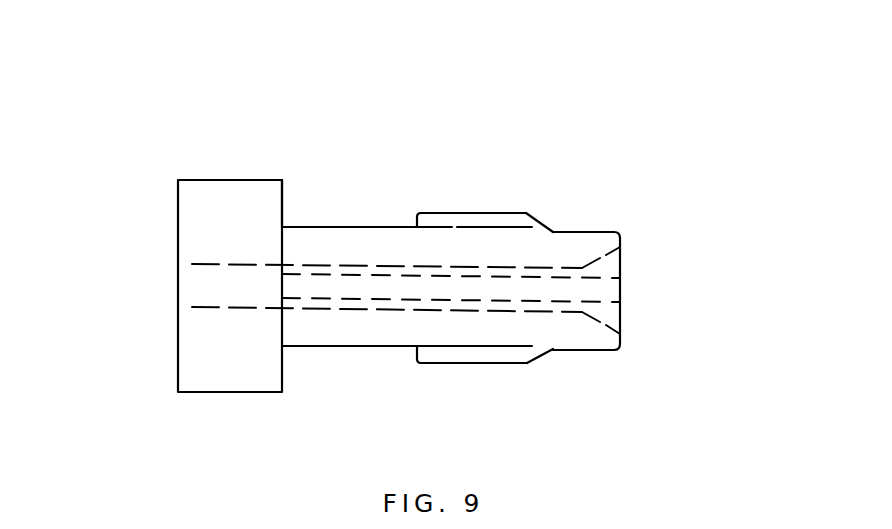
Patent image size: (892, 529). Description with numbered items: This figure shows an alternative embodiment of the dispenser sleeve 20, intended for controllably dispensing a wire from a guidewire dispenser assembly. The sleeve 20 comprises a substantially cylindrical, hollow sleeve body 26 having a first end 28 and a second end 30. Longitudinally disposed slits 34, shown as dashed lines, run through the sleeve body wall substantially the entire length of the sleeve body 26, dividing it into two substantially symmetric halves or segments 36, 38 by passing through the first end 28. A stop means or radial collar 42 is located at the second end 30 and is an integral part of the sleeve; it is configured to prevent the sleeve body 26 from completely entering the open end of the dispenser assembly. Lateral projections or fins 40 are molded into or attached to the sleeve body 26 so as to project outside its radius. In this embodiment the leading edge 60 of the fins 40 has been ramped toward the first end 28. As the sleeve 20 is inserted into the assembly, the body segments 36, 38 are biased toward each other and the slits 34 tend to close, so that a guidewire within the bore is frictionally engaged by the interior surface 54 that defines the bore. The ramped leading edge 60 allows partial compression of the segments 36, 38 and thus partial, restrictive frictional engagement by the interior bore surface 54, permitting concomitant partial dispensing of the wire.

The sleeve 20 is at (490, 124).
The sleeve body 26 is at (325, 348).
The first end 28 is at (598, 352).
The second end 30 is at (212, 393).
The slits 34 is at (378, 276).
The segment 36 is at (390, 250).
The segment 38 is at (377, 330).
The lateral projections 40 is at (458, 227).
The stop means 42 is at (285, 200).
The interior surface 54 is at (190, 264).
The leading edge 60 is at (542, 222).